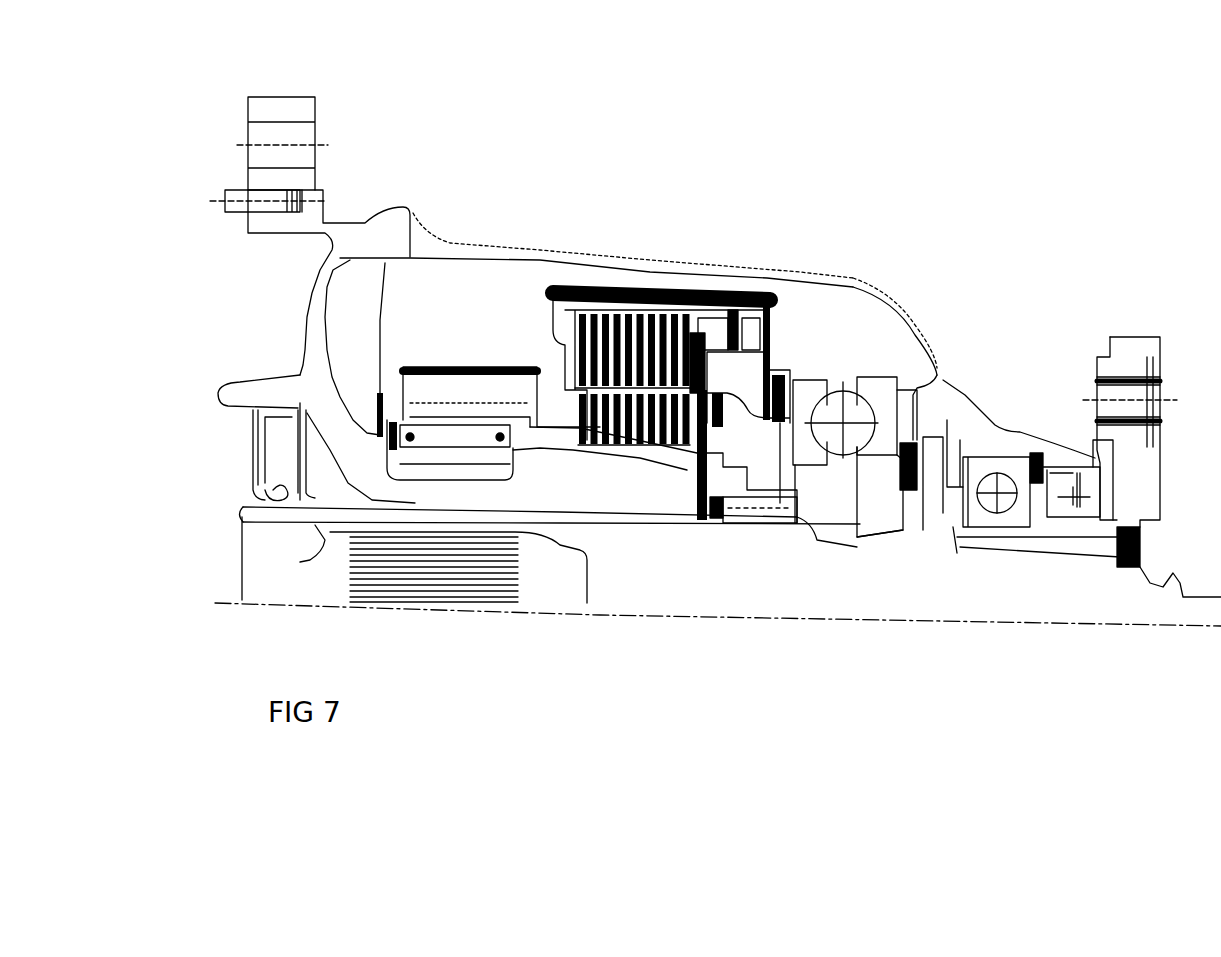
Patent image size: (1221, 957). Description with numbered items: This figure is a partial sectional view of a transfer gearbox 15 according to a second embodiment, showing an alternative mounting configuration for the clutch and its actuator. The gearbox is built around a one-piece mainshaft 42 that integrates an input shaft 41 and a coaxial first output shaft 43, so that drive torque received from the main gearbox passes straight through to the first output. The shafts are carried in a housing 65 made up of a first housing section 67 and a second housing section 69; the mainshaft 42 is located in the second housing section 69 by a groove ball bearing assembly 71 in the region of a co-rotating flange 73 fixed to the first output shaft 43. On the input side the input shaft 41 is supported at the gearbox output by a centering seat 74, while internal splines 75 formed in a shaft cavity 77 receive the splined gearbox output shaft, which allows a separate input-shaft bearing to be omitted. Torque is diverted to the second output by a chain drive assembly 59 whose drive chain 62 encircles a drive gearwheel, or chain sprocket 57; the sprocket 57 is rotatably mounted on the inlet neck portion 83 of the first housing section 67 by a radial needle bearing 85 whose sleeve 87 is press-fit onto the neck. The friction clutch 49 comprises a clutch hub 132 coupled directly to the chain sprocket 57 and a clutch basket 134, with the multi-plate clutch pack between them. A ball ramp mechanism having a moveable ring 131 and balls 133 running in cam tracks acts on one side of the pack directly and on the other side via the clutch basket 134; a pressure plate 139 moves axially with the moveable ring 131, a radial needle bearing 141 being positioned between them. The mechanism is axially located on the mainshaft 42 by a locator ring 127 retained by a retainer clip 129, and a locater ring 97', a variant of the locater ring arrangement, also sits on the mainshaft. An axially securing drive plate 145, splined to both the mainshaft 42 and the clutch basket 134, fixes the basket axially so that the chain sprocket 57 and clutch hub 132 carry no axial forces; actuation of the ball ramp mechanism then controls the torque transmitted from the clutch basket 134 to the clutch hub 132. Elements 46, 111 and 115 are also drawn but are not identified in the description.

The transfer gearbox 15 is at (638, 196).
The input shaft 41 is at (297, 513).
The mainshaft 42 is at (908, 610).
The first output shaft 43 is at (1160, 613).
The hub 46 is at (889, 362).
The friction clutch 49 is at (647, 290).
The drive gearwheel 57 is at (493, 427).
The chain drive assembly 59 is at (430, 365).
The drive chain 62 is at (468, 378).
The housing 65 is at (437, 205).
The first housing section 67 is at (358, 237).
The second housing section 69 is at (763, 273).
The groove ball bearing assembly 71 is at (1000, 457).
The co-rotating flange 73 is at (1130, 350).
The centering seat 74 is at (297, 547).
The internal splines 75 is at (497, 602).
The shaft cavity 77 is at (563, 597).
The inlet neck portion 83 is at (417, 490).
The radial needle bearing 85 is at (467, 455).
The sleeve 87 is at (510, 470).
The locater ring 97' is at (974, 293).
The bracket 111 is at (255, 437).
The hub flange 115 is at (872, 463).
The locator ring 127 is at (930, 440).
The retainer clip 129 is at (943, 513).
The moveable second ring 131 is at (805, 372).
The clutch hub 132 is at (636, 460).
The balls 133 is at (840, 437).
The clutch basket 134 is at (567, 290).
The pressure plate 139 is at (732, 375).
The radial needle bearing 141 is at (781, 450).
The drive plate 145 is at (760, 418).